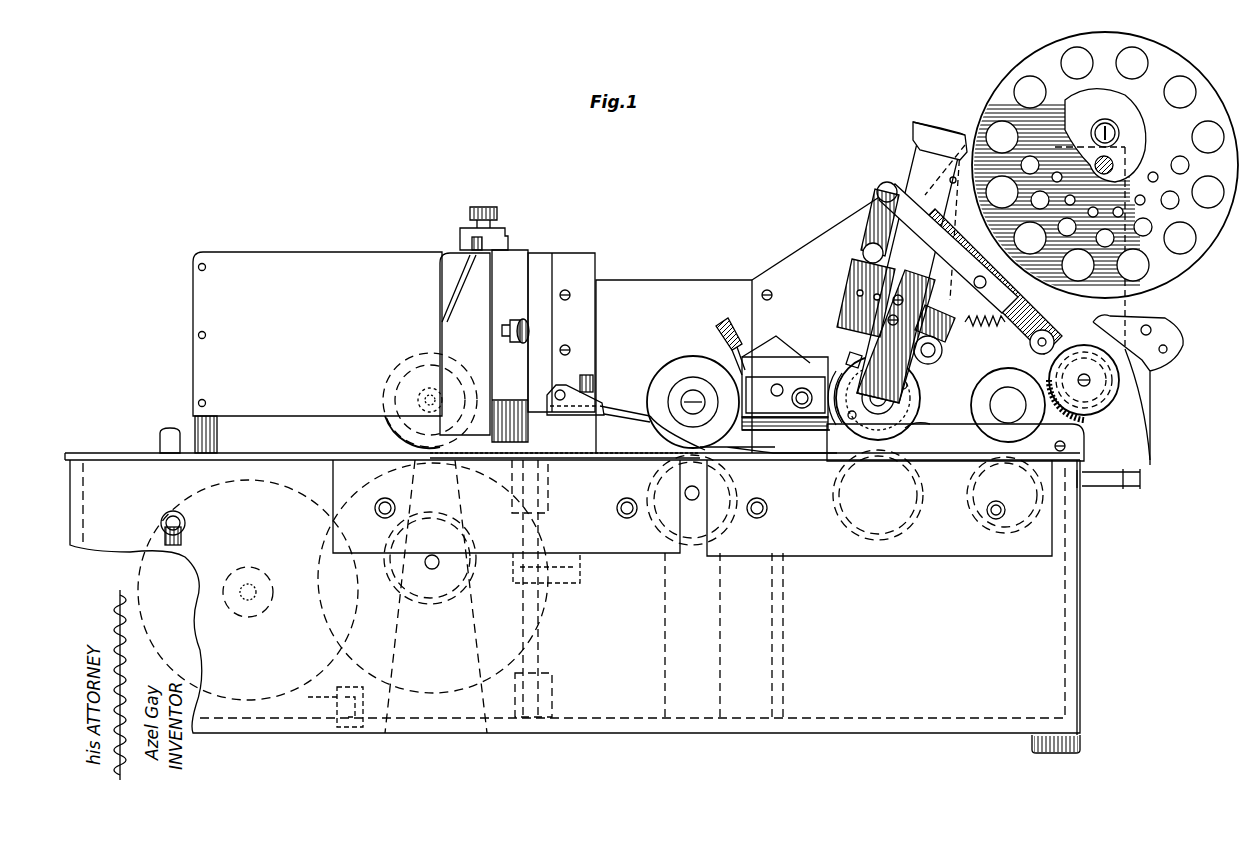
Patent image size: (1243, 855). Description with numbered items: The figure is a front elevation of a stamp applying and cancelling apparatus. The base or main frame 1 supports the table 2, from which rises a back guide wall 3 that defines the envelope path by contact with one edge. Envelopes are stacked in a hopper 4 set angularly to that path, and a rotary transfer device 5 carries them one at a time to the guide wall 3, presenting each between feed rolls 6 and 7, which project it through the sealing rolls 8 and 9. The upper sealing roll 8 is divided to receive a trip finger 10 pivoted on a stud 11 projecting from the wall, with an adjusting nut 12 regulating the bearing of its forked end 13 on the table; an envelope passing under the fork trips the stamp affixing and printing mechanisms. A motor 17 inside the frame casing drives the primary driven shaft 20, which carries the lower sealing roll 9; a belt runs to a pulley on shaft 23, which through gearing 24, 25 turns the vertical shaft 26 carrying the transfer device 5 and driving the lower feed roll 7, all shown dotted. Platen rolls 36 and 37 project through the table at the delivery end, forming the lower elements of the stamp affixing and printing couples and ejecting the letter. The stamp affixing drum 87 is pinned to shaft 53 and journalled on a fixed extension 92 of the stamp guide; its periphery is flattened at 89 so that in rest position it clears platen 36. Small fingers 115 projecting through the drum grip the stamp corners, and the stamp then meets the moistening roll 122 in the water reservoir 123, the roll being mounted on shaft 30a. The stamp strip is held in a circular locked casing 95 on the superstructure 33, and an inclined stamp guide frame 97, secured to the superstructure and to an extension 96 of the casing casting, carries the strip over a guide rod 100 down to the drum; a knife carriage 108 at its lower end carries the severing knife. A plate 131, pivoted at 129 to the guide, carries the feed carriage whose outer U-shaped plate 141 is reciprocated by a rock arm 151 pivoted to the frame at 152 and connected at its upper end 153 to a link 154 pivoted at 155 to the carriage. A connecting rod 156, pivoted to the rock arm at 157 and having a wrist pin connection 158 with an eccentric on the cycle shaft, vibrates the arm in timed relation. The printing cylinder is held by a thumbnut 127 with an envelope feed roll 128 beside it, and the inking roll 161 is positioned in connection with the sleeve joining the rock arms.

The base or main frame 1 is at (1073, 535).
The table 2 is at (958, 460).
The back guide wall 3 is at (674, 295).
The hopper 4 is at (301, 398).
The rotary feeding or transfer device 5 is at (575, 452).
The feed roll 6 is at (390, 422).
The lower feed roll 7 is at (389, 462).
The upper sealing roll 8 is at (697, 375).
The lower sealing roll 9 is at (647, 486).
The trip finger 10 is at (622, 420).
The stud 11 is at (563, 391).
The adjusting nut 12 is at (595, 385).
The free forked end 13 is at (735, 437).
The motor 17 is at (350, 653).
The primary driven shaft 20 is at (690, 497).
The shaft 23 is at (432, 569).
The gearing 24 is at (470, 590).
The gearing 25 is at (582, 570).
The vertical shaft 26 is at (540, 640).
The shaft 30a is at (785, 383).
The superstructure 33 is at (824, 233).
The platen roll 36 is at (877, 461).
The platen roll 37 is at (1008, 460).
The shaft 53 is at (874, 398).
The stamp affixing drum 87 is at (920, 410).
The flattened portion 89 is at (930, 428).
The fixed extension of the stamp guide 92 is at (890, 398).
The circular locked casing 95 is at (1177, 60).
The extension of the casing casting 96 is at (940, 130).
The inclined stamp guide frame 97 is at (918, 269).
The guide rod 100 is at (950, 179).
The knife carriage 108 is at (920, 313).
The fingers 115 is at (857, 363).
The moistening roll 122 is at (770, 331).
The water reservoir 123 is at (807, 423).
The thumbnut 127 is at (1008, 405).
The envelope feed roll 128 is at (925, 437).
The pivot 129 is at (842, 300).
The pivoted plate 131 is at (920, 152).
The U-shaped plate 141 is at (887, 192).
The rock arm 151 is at (989, 281).
The pivot stud 152 is at (1045, 330).
The pivot 153 is at (878, 190).
The link 154 is at (878, 210).
The pivot 155 is at (867, 246).
The connecting rod 156 is at (985, 326).
The pivot 157 is at (981, 276).
The wrist pin connection 158 is at (930, 364).
The inking roll 161 is at (1127, 395).